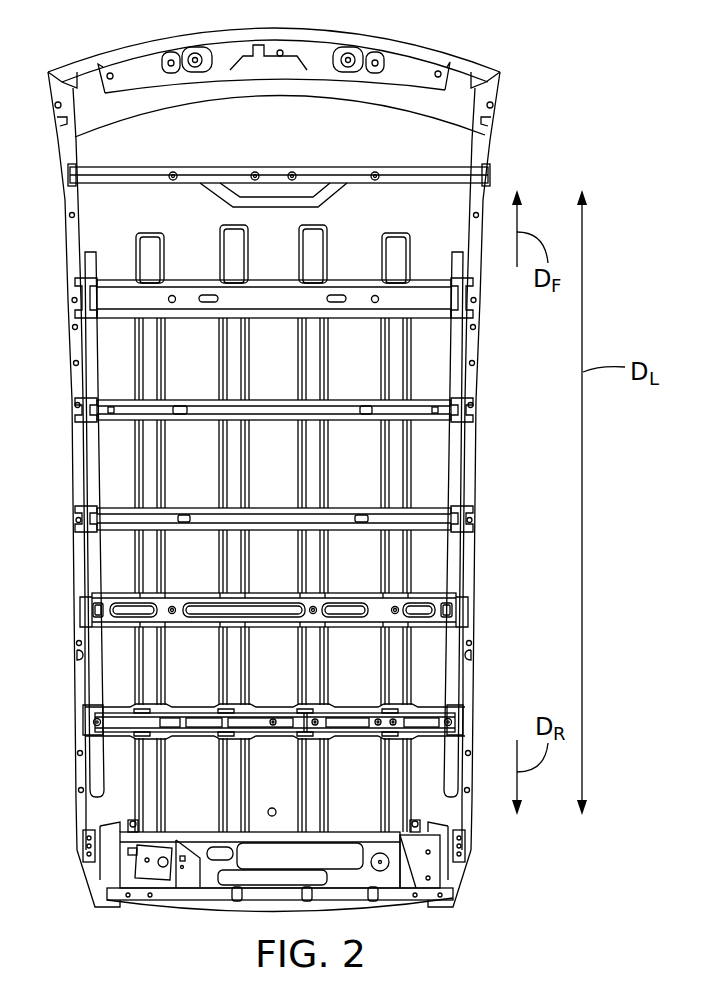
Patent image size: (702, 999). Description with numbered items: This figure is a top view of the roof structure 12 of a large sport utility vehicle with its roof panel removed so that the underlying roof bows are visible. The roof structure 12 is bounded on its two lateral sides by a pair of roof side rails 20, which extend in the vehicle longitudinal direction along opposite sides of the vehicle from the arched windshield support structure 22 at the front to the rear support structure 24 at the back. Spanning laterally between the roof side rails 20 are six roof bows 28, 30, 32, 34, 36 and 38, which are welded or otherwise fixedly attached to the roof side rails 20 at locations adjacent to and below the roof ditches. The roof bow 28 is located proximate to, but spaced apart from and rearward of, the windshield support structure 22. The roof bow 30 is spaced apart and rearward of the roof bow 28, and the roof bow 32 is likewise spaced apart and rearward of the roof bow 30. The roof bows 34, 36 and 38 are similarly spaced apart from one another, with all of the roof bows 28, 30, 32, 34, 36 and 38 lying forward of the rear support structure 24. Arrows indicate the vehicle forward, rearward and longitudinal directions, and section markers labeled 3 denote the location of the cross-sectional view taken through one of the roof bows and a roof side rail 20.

The roof structure 12 is at (525, 127).
The roof side rails 20 is at (77, 463).
The windshield support structure 22 is at (437, 55).
The rear support structure 24 is at (382, 866).
The roof bow 28 is at (107, 177).
The roof bow 30 is at (123, 300).
The roof bow 32 is at (122, 408).
The roof bow 34 is at (113, 518).
The roof bow 36 is at (118, 608).
The roof bow 38 is at (120, 722).
The section line 3- 3 is at (428, 600).